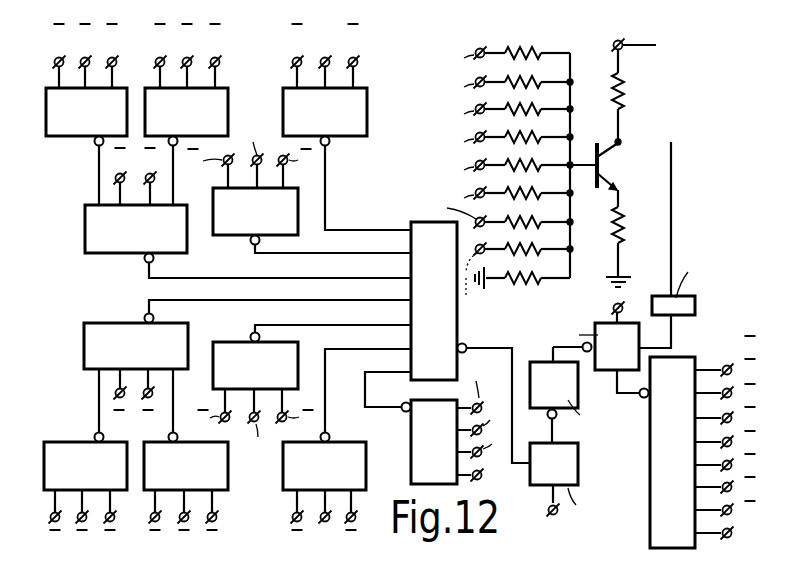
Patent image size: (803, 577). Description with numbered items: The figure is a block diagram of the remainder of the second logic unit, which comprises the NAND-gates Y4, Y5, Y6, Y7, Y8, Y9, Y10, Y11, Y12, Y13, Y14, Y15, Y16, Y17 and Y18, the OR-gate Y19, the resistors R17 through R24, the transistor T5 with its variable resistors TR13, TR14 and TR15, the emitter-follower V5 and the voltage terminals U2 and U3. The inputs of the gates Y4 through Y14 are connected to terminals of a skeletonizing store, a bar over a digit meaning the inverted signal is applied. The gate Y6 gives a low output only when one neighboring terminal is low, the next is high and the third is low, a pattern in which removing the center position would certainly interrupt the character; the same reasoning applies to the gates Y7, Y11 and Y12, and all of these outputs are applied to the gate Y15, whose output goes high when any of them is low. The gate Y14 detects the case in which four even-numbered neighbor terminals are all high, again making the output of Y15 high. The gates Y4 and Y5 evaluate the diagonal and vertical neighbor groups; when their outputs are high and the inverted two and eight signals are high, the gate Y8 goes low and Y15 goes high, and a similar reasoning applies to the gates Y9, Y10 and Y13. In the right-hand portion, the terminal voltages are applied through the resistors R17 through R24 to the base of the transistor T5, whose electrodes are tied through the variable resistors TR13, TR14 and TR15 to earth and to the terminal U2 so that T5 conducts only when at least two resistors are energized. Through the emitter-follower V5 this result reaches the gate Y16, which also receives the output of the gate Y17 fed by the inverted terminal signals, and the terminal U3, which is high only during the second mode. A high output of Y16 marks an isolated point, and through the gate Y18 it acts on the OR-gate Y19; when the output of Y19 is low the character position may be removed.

The NAND-gate Y4 is at (86, 114).
The NAND-gate Y5 is at (186, 114).
The NAND-gate Y6 is at (347, 127).
The NAND-gate Y7 is at (299, 186).
The NAND-gate Y8 is at (248, 212).
The NAND-gate Y9 is at (85, 496).
The NAND-gate Y10 is at (186, 496).
The NAND-gate Y11 is at (347, 453).
The NAND-gate Y12 is at (304, 391).
The NAND-gate Y13 is at (247, 368).
The NAND-gate Y14 is at (435, 420).
The NAND-gate Y15 is at (470, 342).
The NAND-gate Y16 is at (607, 355).
The NAND-gate Y17 is at (703, 441).
The NAND-gate Y18 is at (573, 395).
The OR-gate Y19 is at (570, 485).
The resistor R17 is at (539, 52).
The resistor R24 is at (536, 257).
The variable resistor TR13 is at (530, 282).
The variable resistor TR14 is at (625, 223).
The variable resistor TR15 is at (633, 98).
The transistor T5 is at (610, 165).
The voltage terminal U2 is at (649, 43).
The voltage terminal U3 is at (635, 303).
The emitter-follower V5 is at (696, 311).